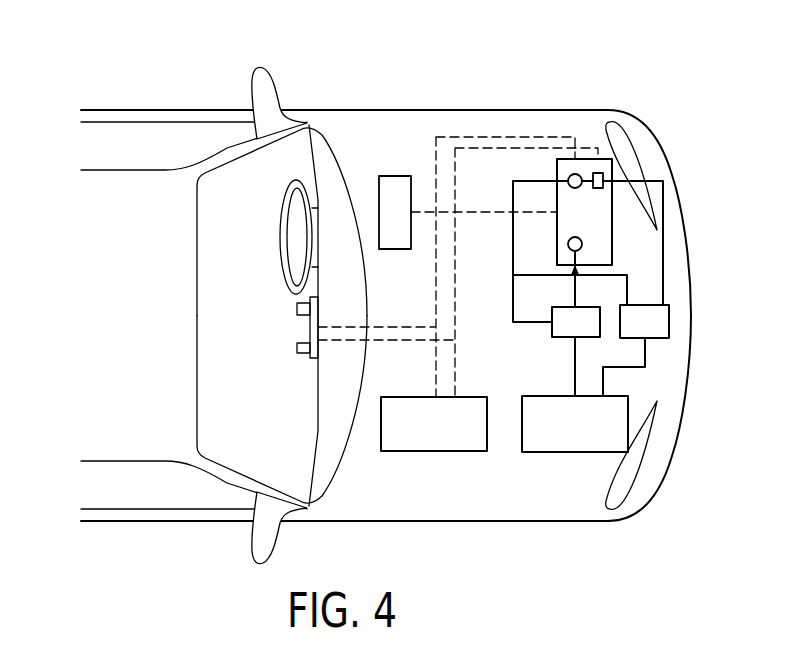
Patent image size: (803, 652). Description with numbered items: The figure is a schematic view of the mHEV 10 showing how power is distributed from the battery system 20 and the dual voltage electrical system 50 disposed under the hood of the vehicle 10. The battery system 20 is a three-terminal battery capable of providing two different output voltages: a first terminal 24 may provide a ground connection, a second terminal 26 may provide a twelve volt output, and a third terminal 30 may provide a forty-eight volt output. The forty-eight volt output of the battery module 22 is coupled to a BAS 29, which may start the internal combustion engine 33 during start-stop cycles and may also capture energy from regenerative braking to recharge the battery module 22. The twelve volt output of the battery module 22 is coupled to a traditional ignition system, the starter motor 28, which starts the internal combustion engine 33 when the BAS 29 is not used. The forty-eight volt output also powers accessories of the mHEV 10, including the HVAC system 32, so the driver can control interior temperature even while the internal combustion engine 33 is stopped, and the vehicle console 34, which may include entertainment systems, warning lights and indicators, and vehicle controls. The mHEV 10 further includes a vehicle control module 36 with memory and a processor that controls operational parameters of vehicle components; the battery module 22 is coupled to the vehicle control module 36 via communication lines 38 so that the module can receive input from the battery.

The mHEV 10 is at (390, 60).
The battery system 20 is at (617, 70).
The battery module 22 is at (612, 242).
The first terminal 24 is at (570, 176).
The second terminal 26 is at (568, 247).
The starter motor 28 is at (562, 338).
The BAS 29 is at (669, 322).
The third terminal 30 is at (603, 186).
The HVAC system 32 is at (433, 451).
The internal combustion engine 33 is at (549, 396).
The vehicle console 34 is at (298, 327).
The vehicle control module 36 is at (392, 176).
The communication lines 38 is at (481, 208).
The dual voltage electrical system 50 is at (670, 240).